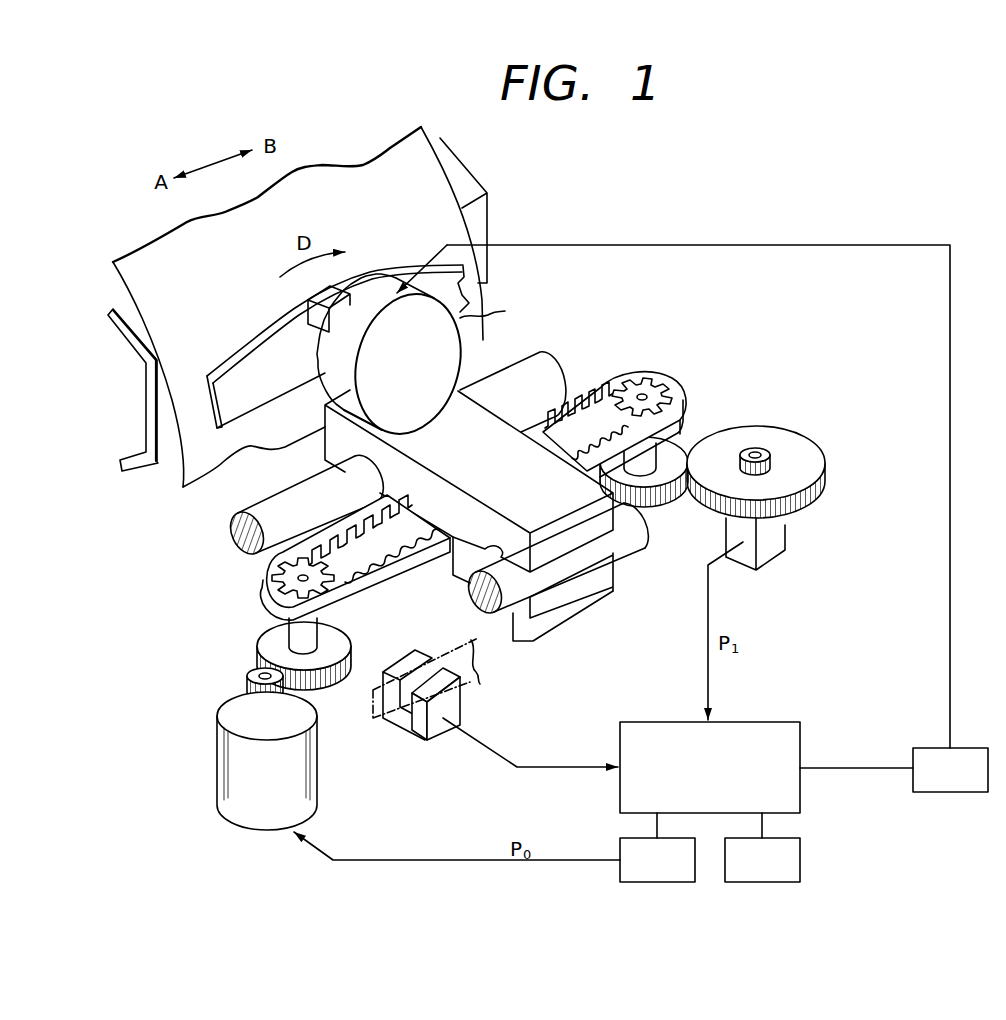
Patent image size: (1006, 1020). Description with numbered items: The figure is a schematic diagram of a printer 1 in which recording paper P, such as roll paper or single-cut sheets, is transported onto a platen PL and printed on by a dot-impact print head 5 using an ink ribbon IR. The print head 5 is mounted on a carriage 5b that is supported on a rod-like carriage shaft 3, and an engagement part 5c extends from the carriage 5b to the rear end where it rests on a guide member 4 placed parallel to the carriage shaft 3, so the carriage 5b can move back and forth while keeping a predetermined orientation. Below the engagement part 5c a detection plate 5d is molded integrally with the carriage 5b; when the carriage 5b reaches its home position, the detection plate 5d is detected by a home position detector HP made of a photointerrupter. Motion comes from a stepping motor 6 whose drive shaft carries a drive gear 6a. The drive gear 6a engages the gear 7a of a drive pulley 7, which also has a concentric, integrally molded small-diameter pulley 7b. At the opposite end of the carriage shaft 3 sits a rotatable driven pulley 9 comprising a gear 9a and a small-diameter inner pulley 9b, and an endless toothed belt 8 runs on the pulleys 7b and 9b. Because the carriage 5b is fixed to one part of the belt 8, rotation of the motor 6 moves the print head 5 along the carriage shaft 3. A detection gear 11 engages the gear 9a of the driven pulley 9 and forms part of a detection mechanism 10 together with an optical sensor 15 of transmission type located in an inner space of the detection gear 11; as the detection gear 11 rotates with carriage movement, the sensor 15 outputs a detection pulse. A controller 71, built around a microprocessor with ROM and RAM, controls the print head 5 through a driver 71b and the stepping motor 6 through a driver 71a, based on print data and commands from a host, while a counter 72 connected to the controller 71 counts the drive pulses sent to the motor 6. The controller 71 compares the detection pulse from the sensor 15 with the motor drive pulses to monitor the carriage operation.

The printer 1 is at (100, 822).
The carriage shaft 3 is at (232, 530).
The guide member 4 is at (633, 533).
The print head 5 is at (453, 320).
The carriage 5b is at (504, 461).
The engagement part 5c is at (577, 537).
The detection plate 5d is at (573, 623).
The stepping motor 6 is at (217, 752).
The drive gear 6a is at (247, 680).
The drive pulley 7 is at (127, 558).
The gear 7a is at (263, 640).
The small-diameter pulley 7b is at (265, 585).
The endless toothed belt 8 is at (590, 400).
The driven pulley 9 is at (743, 302).
The gear 9a is at (677, 452).
The small-diameter inner pulley 9b is at (662, 385).
The detection mechanism 10 is at (877, 442).
The detection gear 11 is at (818, 461).
The optical sensor 15 is at (786, 536).
The controller 71 is at (710, 767).
The driver 71a is at (657, 847).
The driver 71b is at (717, 518).
The counter 72 is at (762, 847).
The recording paper P is at (123, 278).
The platen PL is at (145, 400).
The ink ribbon IR is at (247, 348).
The home position detector HP is at (440, 732).